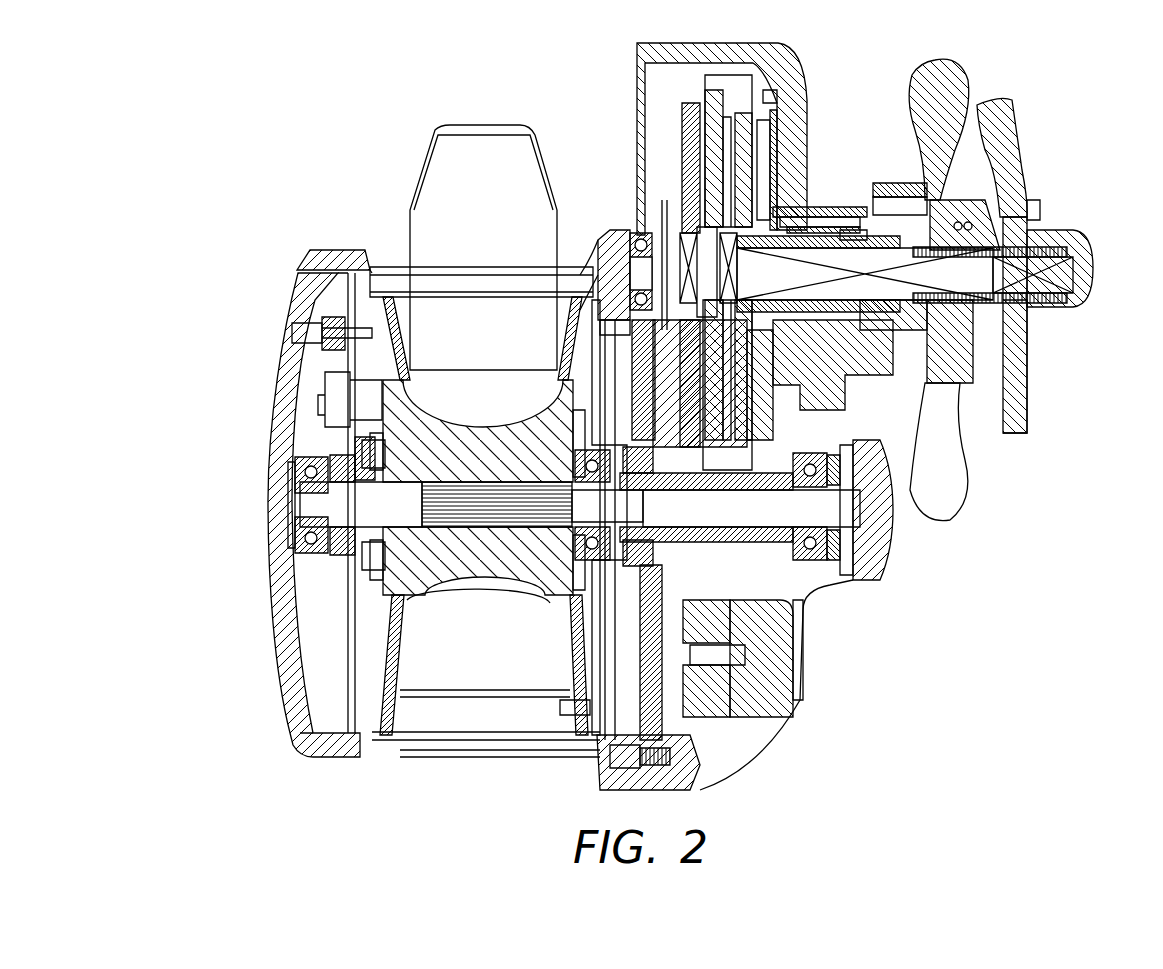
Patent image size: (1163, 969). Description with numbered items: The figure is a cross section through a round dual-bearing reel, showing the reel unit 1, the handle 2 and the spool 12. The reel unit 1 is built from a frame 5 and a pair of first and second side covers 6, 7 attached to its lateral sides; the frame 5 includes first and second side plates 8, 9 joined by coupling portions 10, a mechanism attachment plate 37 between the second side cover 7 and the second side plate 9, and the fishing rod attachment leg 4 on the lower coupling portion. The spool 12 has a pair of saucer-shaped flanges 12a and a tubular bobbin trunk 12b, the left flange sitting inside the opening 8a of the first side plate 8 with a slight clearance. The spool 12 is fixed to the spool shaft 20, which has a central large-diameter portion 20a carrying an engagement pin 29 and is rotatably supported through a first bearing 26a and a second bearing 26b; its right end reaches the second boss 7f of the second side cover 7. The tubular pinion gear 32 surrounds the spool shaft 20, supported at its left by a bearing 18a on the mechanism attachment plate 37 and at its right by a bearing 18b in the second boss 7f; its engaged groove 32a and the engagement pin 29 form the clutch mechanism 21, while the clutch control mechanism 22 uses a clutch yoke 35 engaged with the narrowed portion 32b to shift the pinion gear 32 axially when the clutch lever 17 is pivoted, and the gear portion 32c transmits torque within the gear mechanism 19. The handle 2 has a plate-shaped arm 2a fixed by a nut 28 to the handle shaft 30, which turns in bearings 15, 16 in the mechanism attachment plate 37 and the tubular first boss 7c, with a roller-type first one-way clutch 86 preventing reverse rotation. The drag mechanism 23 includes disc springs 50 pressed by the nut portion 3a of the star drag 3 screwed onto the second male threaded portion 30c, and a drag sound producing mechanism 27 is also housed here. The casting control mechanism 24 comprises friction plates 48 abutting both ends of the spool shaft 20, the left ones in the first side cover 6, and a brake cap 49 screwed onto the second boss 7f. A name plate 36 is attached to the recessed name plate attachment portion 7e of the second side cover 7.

The reel unit 1 is at (342, 223).
The handle 2 is at (1052, 157).
The arm 2a is at (1017, 393).
The star drag 3 is at (972, 520).
The nut portion 3a is at (995, 103).
The fishing rod attachment leg 4 is at (470, 160).
The frame 5 is at (303, 237).
The first side cover 6 is at (287, 387).
The second side cover 7 is at (717, 742).
The first boss 7c is at (827, 195).
The name plate attachment portion 7e is at (838, 420).
The second boss 7f is at (863, 452).
The first side plate 8 is at (333, 260).
The opening 8a is at (387, 258).
The second side plate 9 is at (620, 172).
The coupling portions 10 is at (467, 476).
The spool 12 is at (483, 598).
The flanges 12a is at (397, 667).
The bobbin trunk 12b is at (447, 598).
The bearing 15 is at (640, 232).
The bearing 16 is at (897, 190).
The clutch lever 17 is at (797, 707).
The bearing 18a is at (577, 267).
The bearing 18b is at (893, 560).
The gear mechanism 19 is at (815, 585).
The spool shaft 20 is at (462, 474).
The large-diameter portion 20a is at (337, 578).
The clutch mechanism 21 is at (585, 562).
The clutch control mechanism 22 is at (805, 655).
The drag mechanism 23 is at (758, 123).
The casting control mechanism 24 is at (875, 580).
The first bearing 26a is at (290, 433).
The second bearing 26b is at (560, 353).
The drag sound producing mechanism 27 is at (792, 95).
The nut 28 is at (1077, 237).
The engagement pin 29 is at (543, 713).
The handle shaft 30 is at (1027, 333).
The second male threaded portion 30c is at (1017, 187).
The pinion gear 32 is at (815, 620).
The engaged groove 32a is at (543, 533).
The narrowed portion 32b is at (727, 673).
The gear portion 32c is at (795, 640).
The clutch yoke 35 is at (615, 757).
The name plate 36 is at (803, 382).
The mechanism attachment plate 37 is at (608, 448).
The friction plates 48 is at (287, 493).
The brake cap 49 is at (877, 517).
The disc springs 50 is at (953, 380).
The first one-way clutch 86 is at (806, 212).